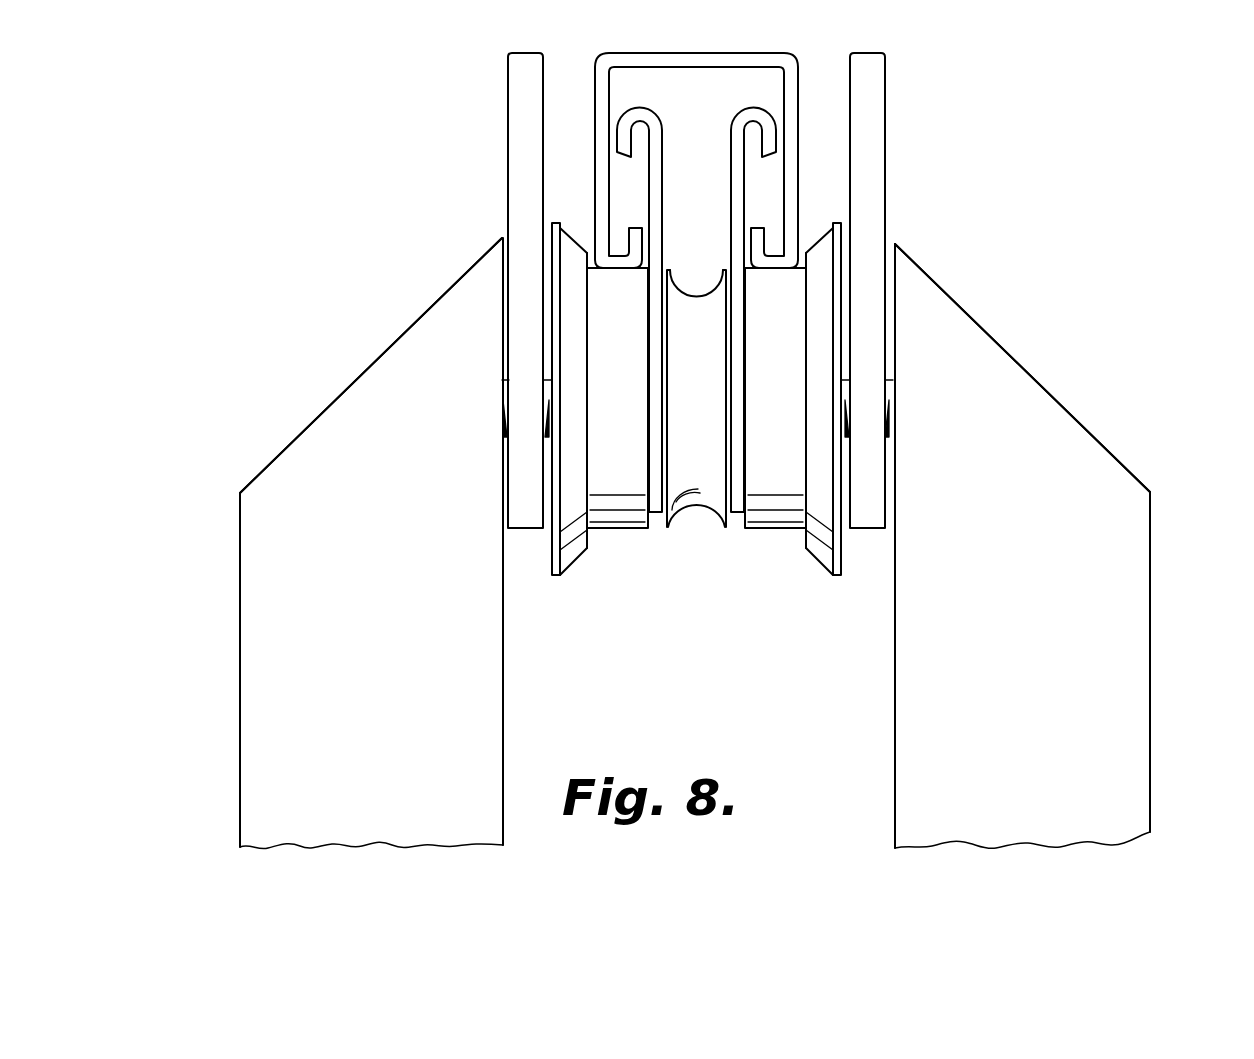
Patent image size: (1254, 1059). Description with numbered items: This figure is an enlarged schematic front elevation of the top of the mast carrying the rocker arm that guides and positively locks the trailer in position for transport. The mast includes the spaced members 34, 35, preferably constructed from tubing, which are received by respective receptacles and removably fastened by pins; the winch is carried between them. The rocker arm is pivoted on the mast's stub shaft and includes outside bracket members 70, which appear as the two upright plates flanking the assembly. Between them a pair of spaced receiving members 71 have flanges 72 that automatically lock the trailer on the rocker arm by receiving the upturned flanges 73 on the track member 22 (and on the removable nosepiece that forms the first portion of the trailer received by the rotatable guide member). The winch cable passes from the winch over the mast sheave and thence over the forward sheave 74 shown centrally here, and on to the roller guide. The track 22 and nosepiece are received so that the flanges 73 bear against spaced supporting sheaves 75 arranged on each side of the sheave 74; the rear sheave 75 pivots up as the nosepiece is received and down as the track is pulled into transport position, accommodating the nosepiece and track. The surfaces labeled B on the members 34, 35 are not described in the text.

The track member 22 is at (703, 53).
The spaced member 34 is at (243, 613).
The spaced member 35 is at (1133, 602).
The panel bevel B is at (365, 372).
The outside bracket member 70 is at (517, 103).
The receiving member 71 is at (730, 183).
The flange 72 is at (615, 138).
The upturned flange 73 is at (627, 240).
The forward sheave 74 is at (710, 383).
The supporting sheave 75 is at (622, 528).